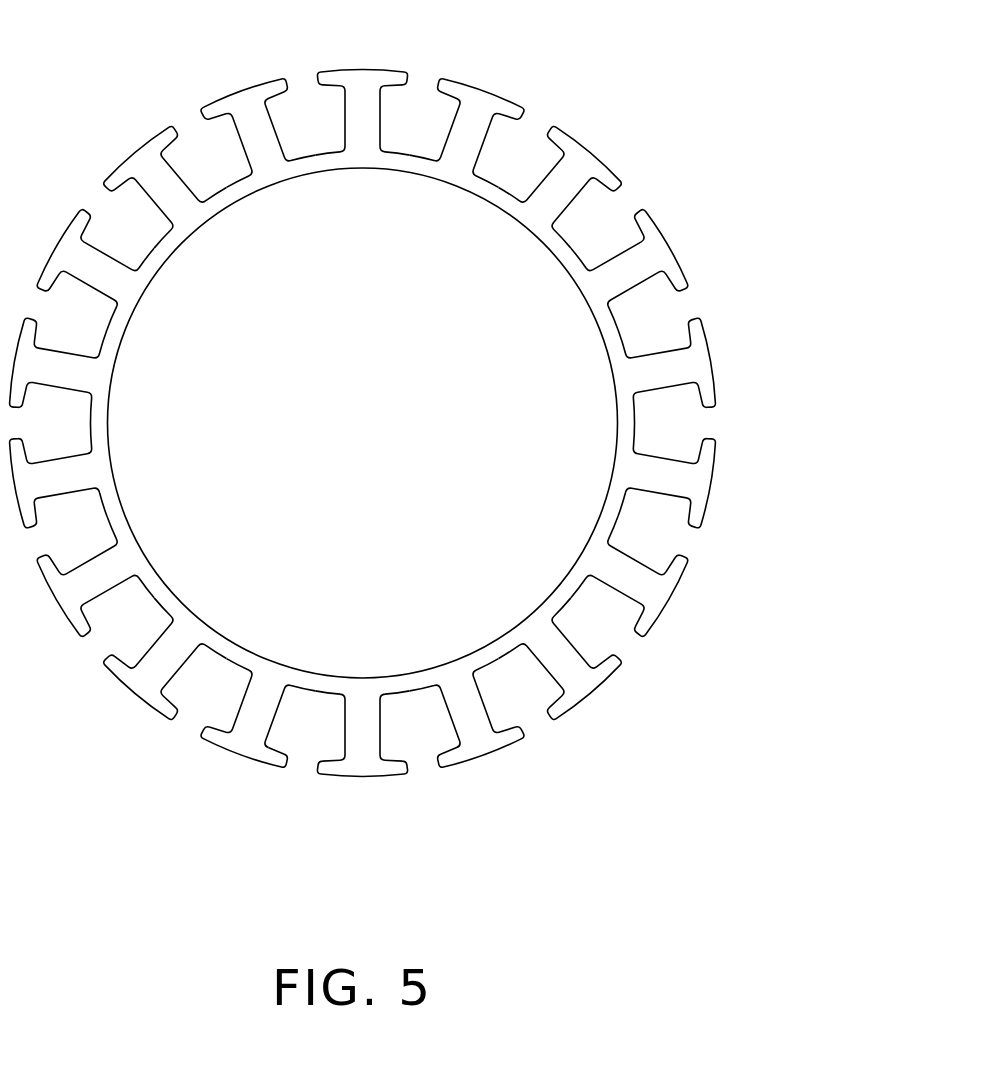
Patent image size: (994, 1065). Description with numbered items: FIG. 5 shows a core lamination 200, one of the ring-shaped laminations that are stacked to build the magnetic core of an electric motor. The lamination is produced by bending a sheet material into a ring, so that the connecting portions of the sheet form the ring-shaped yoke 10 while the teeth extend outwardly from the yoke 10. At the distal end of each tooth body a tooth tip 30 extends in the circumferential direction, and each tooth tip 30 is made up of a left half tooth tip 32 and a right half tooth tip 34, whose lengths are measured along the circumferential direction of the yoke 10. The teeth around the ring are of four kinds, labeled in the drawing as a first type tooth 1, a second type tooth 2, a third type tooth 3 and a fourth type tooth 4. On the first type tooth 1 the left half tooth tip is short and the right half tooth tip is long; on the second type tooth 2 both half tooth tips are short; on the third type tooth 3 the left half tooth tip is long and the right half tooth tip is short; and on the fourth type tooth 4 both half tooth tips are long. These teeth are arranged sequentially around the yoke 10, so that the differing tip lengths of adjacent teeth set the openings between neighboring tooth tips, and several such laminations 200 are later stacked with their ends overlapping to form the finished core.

The core lamination 200 is at (552, 66).
The yoke 10 is at (608, 333).
The tooth tip 30 is at (202, 751).
The left half tooth tip 32 is at (272, 763).
The right half tooth tip 34 is at (203, 734).
The first type tooth 1 is at (349, 483).
The second type tooth 2 is at (619, 281).
The third type tooth 3 is at (352, 123).
The fourth type tooth 4 is at (456, 143).